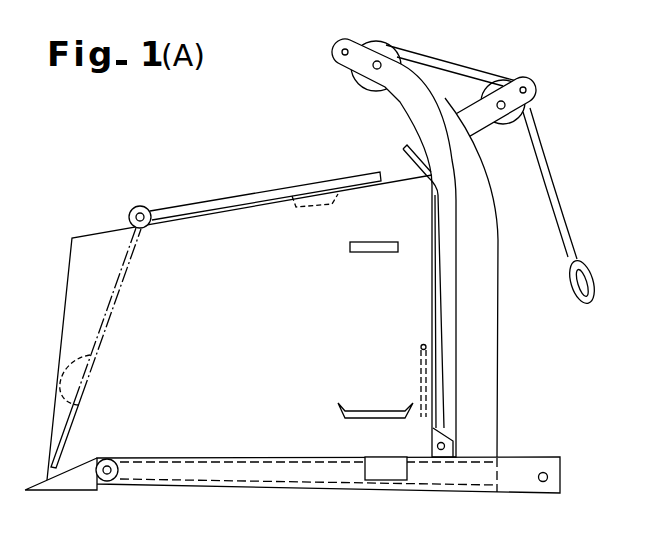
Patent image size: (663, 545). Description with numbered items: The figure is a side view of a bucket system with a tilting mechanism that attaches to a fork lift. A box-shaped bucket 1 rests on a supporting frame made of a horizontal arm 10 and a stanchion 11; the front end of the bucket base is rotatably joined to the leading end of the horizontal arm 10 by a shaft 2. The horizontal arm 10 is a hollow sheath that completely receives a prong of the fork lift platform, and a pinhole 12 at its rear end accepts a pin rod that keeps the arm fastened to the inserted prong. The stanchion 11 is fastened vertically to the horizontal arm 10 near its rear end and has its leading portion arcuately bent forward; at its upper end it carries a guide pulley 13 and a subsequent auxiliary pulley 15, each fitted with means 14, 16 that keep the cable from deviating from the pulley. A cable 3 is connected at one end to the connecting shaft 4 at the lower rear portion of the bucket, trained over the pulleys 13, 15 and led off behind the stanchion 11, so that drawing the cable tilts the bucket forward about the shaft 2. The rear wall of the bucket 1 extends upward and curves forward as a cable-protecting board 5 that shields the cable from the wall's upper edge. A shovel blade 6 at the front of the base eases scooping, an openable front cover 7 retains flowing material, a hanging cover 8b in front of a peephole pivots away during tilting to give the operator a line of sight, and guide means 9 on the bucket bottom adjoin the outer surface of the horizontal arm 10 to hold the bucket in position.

The bucket 1 is at (90, 294).
The shaft 2 is at (107, 482).
The cables 3 is at (559, 205).
The connecting shaft 4 is at (443, 448).
The cable-protecting board 5 is at (406, 156).
The shovel blade 6 is at (47, 493).
The front cover 7 is at (228, 199).
The hanging covers 8b is at (420, 370).
The guide means 9 is at (385, 474).
The horizontal arms 10 is at (305, 487).
The stanchions 11 is at (490, 342).
The pinholes 12 is at (544, 483).
The guide pulleys 13 is at (362, 79).
The cable-deviation preventing means 14 is at (340, 48).
The auxiliary pulleys 15 is at (517, 124).
The cable-deviation preventing means 16 is at (521, 80).